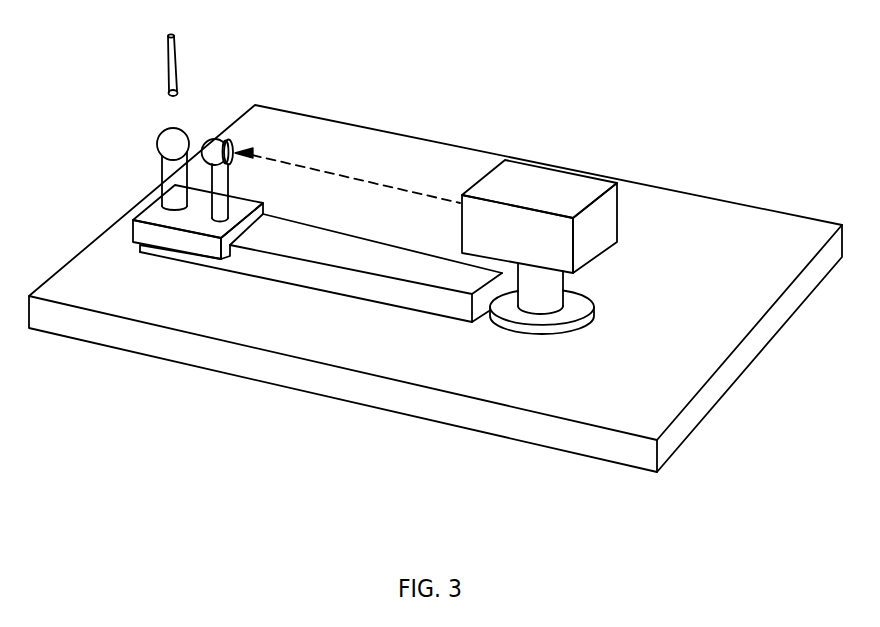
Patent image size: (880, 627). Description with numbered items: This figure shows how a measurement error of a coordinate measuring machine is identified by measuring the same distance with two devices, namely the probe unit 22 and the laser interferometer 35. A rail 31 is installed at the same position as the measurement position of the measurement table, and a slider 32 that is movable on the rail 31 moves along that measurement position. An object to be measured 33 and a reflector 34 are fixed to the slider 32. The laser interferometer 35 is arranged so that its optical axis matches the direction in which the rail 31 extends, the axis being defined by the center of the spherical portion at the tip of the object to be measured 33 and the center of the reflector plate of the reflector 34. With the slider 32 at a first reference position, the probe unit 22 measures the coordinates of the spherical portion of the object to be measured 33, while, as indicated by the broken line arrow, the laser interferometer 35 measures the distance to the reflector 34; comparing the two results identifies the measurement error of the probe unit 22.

The probe unit 22 is at (177, 70).
The rail 31 is at (315, 290).
The slider 32 is at (133, 243).
The object to be measured 33 is at (183, 130).
The reflector 34 is at (240, 152).
The laser interferometer 35 is at (617, 222).